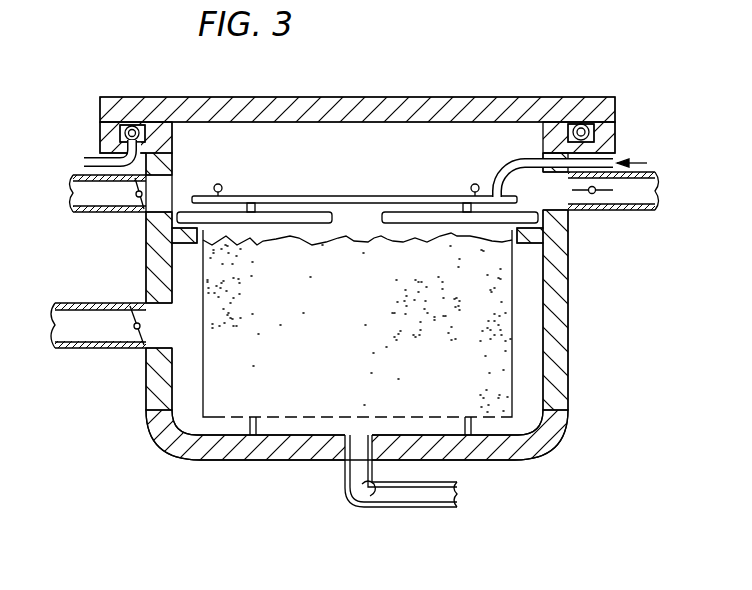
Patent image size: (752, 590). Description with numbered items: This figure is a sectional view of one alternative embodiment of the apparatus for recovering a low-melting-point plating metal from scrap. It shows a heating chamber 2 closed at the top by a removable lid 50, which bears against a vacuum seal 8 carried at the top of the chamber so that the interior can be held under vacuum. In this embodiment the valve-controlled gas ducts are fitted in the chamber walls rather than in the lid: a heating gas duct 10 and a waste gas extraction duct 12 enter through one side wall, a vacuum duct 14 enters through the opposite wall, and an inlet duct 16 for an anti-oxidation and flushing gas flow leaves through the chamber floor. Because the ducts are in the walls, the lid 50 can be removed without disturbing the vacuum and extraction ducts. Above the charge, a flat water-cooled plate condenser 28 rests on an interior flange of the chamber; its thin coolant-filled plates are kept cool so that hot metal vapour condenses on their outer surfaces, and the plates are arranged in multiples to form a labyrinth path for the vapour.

The heating chamber 2 is at (550, 372).
The vacuum seal 8 is at (583, 122).
The heating gas duct 10 is at (82, 350).
The waste gas extraction duct 12 is at (92, 215).
The vacuum duct 14 is at (608, 212).
The inlet duct 16 is at (458, 494).
The water-cooled plate condenser 28 is at (312, 196).
The lid 50 is at (407, 104).